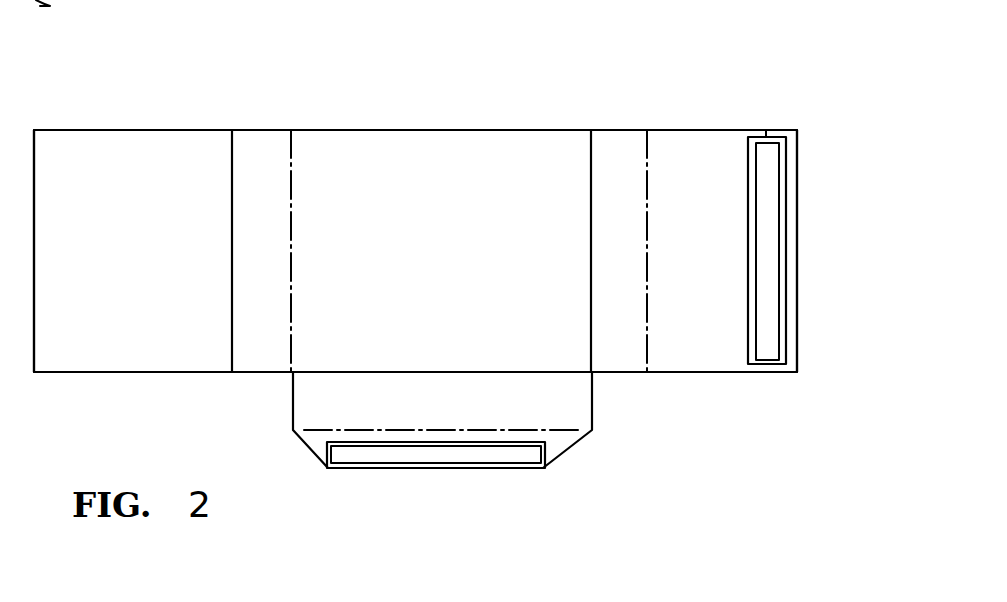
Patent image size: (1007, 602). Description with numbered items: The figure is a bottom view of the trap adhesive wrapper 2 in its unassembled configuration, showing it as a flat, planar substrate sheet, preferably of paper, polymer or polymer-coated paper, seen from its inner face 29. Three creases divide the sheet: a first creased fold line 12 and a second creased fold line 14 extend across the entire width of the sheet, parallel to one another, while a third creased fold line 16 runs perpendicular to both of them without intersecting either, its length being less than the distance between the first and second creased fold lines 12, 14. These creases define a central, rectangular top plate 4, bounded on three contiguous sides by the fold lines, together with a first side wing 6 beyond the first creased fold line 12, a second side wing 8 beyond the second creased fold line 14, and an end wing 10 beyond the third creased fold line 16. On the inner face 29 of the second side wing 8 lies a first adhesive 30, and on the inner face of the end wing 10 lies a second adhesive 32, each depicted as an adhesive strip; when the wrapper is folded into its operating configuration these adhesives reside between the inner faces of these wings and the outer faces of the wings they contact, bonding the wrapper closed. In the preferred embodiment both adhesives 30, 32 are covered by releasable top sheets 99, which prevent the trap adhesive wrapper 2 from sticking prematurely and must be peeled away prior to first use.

The trap adhesive wrapper 2 is at (700, 522).
The top plate 4 is at (521, 146).
The first side wing 6 is at (700, 137).
The second side wing 8 is at (137, 137).
The end wing 10 is at (595, 397).
The first creased fold line 12 is at (592, 243).
The second creased fold line 14 is at (292, 250).
The third creased fold line 16 is at (355, 378).
The inner face 29 is at (402, 190).
The first adhesive 30 is at (772, 229).
The second adhesive 32 is at (517, 452).
The releasable top sheets 99 is at (766, 137).